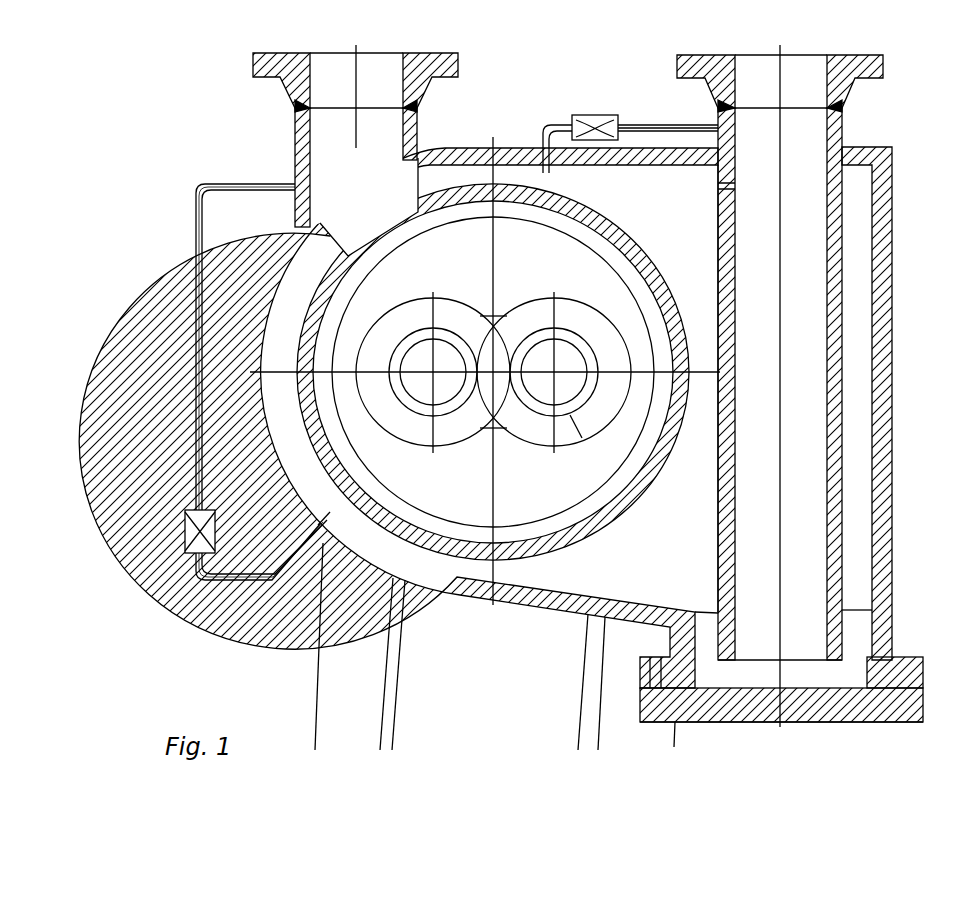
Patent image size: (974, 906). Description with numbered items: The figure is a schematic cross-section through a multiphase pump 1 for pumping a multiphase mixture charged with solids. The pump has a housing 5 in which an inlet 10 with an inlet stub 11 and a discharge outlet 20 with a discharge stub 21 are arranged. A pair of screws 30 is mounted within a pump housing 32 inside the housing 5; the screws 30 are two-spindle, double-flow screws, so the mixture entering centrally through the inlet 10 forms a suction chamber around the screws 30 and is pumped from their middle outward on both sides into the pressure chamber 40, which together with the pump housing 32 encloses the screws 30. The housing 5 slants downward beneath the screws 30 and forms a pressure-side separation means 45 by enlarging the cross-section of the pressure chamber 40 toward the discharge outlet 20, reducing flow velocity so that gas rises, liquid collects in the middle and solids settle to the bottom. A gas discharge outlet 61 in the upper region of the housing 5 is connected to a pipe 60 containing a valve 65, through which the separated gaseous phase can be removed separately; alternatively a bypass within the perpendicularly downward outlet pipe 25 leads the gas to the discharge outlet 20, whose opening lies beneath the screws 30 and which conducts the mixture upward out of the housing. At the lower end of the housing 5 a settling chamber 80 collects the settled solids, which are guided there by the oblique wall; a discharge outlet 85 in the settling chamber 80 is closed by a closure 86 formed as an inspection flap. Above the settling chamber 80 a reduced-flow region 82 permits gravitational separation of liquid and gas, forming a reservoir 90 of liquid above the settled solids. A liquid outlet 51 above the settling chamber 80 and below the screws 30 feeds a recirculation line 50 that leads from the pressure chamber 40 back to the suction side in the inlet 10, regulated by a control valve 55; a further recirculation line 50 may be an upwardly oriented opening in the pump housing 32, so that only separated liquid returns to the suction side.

The multiphase pump 1 is at (247, 664).
The housing 5 is at (357, 553).
The inlet 10 is at (320, 163).
The inlet stub 11 is at (253, 57).
The discharge outlet 20 is at (825, 140).
The discharge stub 21 is at (882, 78).
The outlet pipe 25 is at (880, 405).
The screws 30 is at (528, 307).
The pump housing 32 is at (308, 413).
The pressure chamber 40 is at (521, 178).
The pressure-side separation means 45 is at (700, 516).
The recirculation line 50 is at (197, 440).
The liquid outlet 51 is at (318, 518).
The control valve 55 is at (185, 530).
The pipe 60 is at (647, 125).
The gas discharge outlet 61 is at (535, 153).
The valve 65 is at (585, 115).
The settling chamber 80 is at (857, 632).
The reduced-flow region 82 is at (698, 573).
The discharge outlet 85 is at (823, 690).
The closure 86 is at (885, 722).
The reservoir 90 is at (397, 547).